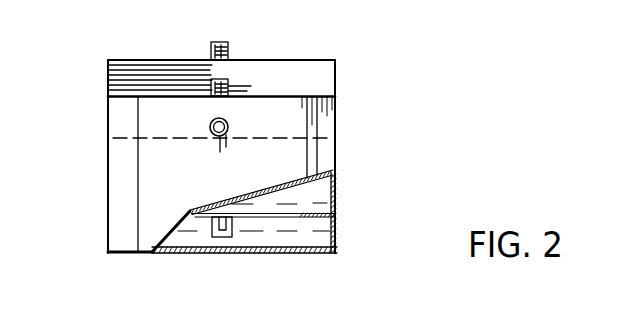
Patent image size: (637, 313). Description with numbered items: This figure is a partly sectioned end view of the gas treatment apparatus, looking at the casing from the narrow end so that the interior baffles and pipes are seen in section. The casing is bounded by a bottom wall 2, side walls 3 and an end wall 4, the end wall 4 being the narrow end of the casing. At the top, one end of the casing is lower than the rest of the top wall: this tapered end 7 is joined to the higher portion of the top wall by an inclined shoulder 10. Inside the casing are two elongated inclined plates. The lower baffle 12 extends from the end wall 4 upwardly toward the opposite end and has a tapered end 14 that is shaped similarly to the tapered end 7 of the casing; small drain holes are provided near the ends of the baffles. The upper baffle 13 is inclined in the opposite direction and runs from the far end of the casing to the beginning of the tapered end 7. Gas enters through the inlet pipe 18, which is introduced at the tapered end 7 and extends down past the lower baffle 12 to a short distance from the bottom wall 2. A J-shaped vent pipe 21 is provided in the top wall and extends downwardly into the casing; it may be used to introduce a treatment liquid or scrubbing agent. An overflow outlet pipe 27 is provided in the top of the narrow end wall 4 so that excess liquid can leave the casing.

The bottom wall 2 is at (268, 250).
The side walls 3 is at (337, 199).
The end wall 4 is at (170, 191).
The tapered end 7 is at (299, 97).
The inclined shoulder 10 is at (264, 73).
The lower baffle 12 is at (290, 217).
The upper baffle 13 is at (133, 138).
The tapered end 14 is at (325, 227).
The inlet pipe 18 is at (211, 87).
The vent pipe 21 is at (218, 42).
The overflow outlet pipe 27 is at (228, 124).